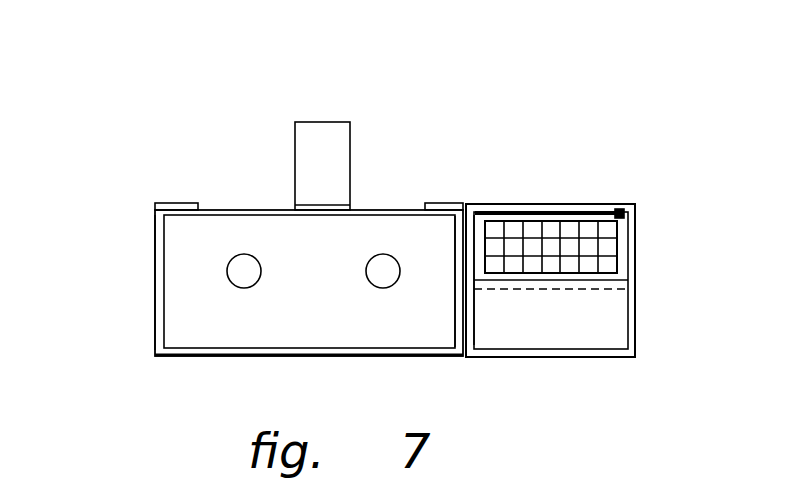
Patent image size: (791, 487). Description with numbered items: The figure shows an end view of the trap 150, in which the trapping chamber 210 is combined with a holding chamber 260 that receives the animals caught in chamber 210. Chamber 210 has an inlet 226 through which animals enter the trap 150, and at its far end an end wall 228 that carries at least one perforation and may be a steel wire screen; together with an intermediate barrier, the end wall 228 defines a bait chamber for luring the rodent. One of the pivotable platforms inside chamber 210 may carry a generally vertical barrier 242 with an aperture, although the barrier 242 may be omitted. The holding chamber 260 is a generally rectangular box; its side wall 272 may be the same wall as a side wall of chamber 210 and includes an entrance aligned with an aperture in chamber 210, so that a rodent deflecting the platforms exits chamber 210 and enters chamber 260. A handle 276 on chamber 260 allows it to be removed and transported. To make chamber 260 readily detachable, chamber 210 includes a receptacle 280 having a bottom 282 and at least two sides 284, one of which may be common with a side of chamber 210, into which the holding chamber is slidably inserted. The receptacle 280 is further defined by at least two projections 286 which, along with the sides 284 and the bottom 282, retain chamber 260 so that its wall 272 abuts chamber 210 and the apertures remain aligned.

The receptacle 280 is at (125, 121).
The chamber 260 is at (385, 134).
The projections 286 is at (177, 203).
The handle 276 is at (337, 122).
The sides 284 is at (153, 263).
The bottom 282 is at (255, 357).
The side wall 272 is at (455, 306).
The chamber 210 is at (583, 148).
The end wall 228 is at (512, 227).
The barrier 242 is at (637, 215).
The inlet 226 is at (620, 279).
The trap 150 is at (702, 481).